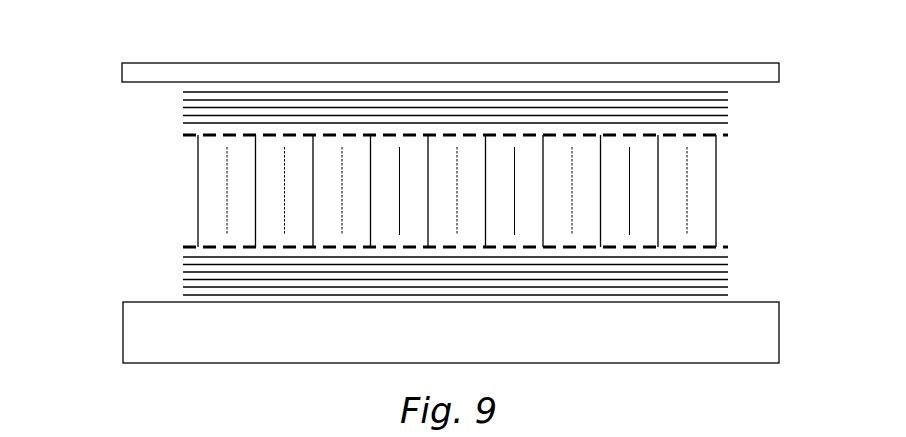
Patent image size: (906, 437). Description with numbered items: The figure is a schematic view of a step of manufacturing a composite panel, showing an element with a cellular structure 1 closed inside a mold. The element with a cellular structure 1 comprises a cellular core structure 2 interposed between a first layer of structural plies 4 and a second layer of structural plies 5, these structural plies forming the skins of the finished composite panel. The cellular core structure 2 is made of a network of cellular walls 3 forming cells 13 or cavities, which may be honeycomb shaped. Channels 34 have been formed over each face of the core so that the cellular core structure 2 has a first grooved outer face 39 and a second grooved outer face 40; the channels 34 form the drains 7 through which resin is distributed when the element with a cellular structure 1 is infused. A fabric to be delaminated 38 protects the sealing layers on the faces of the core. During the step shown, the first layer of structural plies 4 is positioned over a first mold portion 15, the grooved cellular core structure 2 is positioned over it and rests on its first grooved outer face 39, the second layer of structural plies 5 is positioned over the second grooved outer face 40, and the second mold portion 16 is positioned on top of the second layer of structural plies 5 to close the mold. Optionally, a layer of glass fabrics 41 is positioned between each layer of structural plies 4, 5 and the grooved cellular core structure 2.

The element with a cellular structure 1 is at (98, 176).
The cellular core structure 2 is at (718, 190).
The cellular walls 3 is at (212, 193).
The first layer of structural plies 4 is at (733, 273).
The second layer of structural plies 5 is at (733, 108).
The drains 7 is at (455, 78).
The cells 13 is at (518, 160).
The first mold portion 15 is at (782, 336).
The second mold portion 16 is at (782, 72).
The channels 34 is at (455, 78).
The fabric to be delaminated 38 is at (462, 141).
The first grooved outer face 39 is at (402, 254).
The second grooved outer face 40 is at (330, 130).
The layer of glass fabrics 41 is at (505, 255).